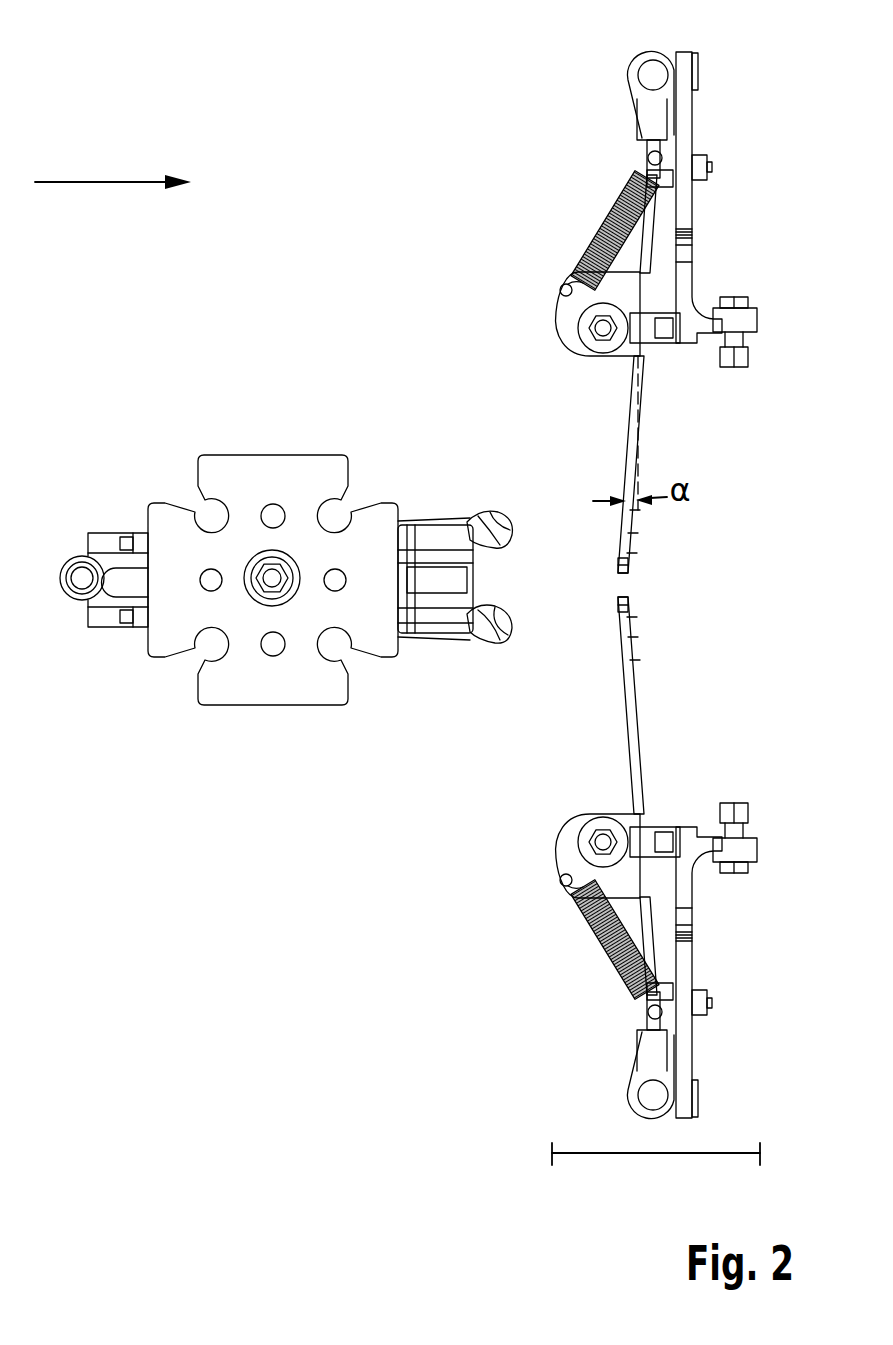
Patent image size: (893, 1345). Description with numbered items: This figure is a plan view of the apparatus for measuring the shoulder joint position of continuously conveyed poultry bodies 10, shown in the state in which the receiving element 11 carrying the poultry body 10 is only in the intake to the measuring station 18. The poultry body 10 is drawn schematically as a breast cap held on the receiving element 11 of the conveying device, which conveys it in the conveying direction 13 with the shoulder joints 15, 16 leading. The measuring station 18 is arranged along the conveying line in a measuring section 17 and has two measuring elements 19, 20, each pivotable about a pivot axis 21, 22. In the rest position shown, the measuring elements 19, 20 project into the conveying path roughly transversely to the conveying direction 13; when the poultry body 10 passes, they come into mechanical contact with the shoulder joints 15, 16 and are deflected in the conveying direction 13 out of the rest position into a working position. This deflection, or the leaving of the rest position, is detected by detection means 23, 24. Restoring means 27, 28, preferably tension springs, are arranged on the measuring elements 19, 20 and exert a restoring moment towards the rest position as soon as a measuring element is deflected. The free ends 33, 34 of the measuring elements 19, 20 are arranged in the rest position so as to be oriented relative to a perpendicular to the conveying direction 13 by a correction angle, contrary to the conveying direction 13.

The poultry body 10 is at (350, 508).
The receiving element 11 is at (168, 690).
The conveying direction 13 is at (105, 182).
The shoulder joint 15 is at (490, 517).
The shoulder joint 16 is at (483, 642).
The measuring section 17 is at (640, 1154).
The measuring station 18 is at (745, 78).
The measuring element 19 is at (632, 457).
The measuring element 20 is at (632, 741).
The pivot axis 21 is at (603, 340).
The pivot axis 22 is at (603, 840).
The detection means 23 is at (652, 102).
The detection means 24 is at (652, 1090).
The restoring means 27 is at (612, 238).
The restoring means 28 is at (608, 942).
The free end 33 is at (625, 571).
The free end 34 is at (625, 600).